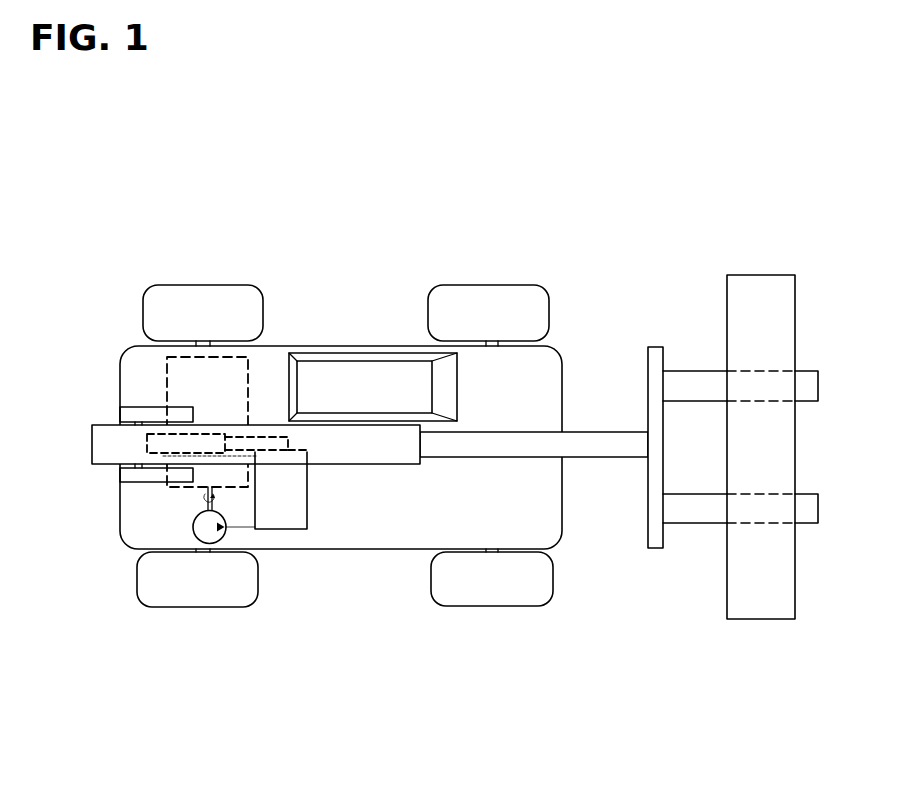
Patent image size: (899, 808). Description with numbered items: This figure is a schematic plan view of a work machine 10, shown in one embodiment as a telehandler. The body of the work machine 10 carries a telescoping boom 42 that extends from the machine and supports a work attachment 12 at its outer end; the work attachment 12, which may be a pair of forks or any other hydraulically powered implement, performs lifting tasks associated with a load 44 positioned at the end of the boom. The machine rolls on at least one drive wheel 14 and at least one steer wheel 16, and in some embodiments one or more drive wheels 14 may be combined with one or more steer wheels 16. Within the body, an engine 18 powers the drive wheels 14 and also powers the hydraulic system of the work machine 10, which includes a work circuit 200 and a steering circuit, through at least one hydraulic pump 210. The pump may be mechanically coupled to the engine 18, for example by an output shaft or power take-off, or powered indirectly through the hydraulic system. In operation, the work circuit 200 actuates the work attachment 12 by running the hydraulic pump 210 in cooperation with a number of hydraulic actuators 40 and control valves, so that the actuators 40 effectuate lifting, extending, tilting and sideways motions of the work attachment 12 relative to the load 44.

The work machine 10 is at (110, 203).
The work attachment 12 is at (648, 347).
The drive wheel 14 is at (155, 285).
The steer wheel 16 is at (435, 285).
The engine 18 is at (167, 371).
The hydraulic actuators 40 is at (146, 442).
The telescoping boom 42 is at (565, 459).
The load 44 is at (752, 619).
The work circuit 200 is at (286, 547).
The hydraulic pump 210 is at (194, 528).